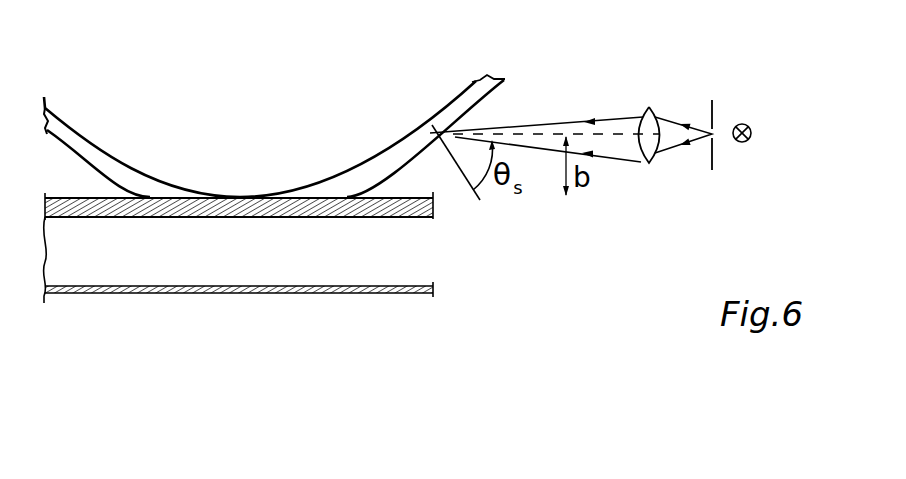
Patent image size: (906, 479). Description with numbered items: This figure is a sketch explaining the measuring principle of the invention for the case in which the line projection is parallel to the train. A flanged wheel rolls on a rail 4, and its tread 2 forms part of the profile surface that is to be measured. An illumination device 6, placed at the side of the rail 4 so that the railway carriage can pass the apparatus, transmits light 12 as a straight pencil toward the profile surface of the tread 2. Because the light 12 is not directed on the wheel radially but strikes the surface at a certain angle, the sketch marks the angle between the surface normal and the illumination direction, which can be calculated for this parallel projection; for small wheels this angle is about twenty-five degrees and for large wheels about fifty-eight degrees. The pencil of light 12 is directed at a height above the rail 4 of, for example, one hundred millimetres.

The tread 2 is at (147, 176).
The rail 4 is at (132, 263).
The illumination device 6 is at (678, 84).
The light 12 is at (617, 123).